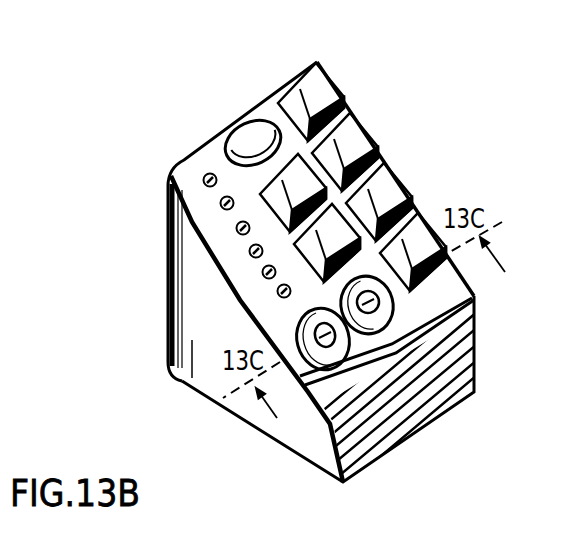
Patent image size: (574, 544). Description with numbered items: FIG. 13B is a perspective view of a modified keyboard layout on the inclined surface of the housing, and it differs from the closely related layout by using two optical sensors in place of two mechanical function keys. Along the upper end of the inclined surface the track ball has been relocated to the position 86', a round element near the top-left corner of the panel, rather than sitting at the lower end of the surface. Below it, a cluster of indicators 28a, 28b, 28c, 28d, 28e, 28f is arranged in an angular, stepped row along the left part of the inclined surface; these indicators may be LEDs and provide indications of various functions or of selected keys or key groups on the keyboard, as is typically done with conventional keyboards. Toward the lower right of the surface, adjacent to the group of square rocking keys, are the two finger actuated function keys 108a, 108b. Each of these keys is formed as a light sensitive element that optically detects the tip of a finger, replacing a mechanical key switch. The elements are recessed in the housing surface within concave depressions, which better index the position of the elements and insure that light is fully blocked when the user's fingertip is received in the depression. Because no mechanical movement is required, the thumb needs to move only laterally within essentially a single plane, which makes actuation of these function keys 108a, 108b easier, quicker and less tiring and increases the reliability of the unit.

The track ball position at upper end of inclined surface 86' is at (253, 101).
The indicator 28a is at (203, 180).
The indicator 28b is at (221, 207).
The indicator 28c is at (237, 231).
The indicator 28d is at (250, 253).
The indicator 28e is at (263, 275).
The indicator 28f is at (279, 295).
The finger actuated function key 108a is at (320, 358).
The finger actuated function key 108b is at (373, 336).